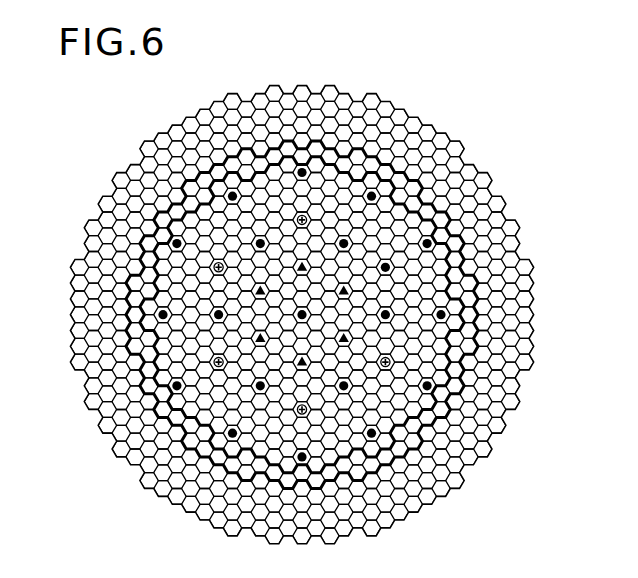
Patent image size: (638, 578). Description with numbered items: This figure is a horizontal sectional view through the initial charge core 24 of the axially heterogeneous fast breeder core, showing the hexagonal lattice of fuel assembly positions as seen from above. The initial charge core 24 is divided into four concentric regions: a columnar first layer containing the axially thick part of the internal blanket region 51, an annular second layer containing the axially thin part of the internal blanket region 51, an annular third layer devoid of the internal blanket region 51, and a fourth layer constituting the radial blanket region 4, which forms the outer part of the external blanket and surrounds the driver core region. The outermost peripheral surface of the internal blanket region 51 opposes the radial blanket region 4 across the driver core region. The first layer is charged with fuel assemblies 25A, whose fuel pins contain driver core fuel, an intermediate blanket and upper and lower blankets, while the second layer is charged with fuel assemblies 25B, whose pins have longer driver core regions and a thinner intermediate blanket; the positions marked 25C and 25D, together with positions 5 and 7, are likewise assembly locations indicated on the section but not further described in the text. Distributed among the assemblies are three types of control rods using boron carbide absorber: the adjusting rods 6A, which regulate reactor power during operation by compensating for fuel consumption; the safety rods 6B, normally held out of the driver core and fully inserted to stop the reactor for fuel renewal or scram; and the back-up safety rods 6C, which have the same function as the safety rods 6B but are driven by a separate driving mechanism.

The radial blanket region 4 is at (409, 494).
The inner core region boundary 5 is at (135, 329).
The adjusting rods 6A is at (449, 320).
The safety rods 6B is at (301, 368).
The back-up safety rods 6C is at (205, 352).
The fuel assembly position 7 is at (315, 168).
The initial charge core 24 is at (523, 290).
The fuel assembly 25A is at (247, 378).
The fuel assemblies 25B is at (167, 281).
The third core zone 25C is at (372, 228).
The outer core zone 25D is at (224, 126).
The internal blanket region 51 is at (367, 446).